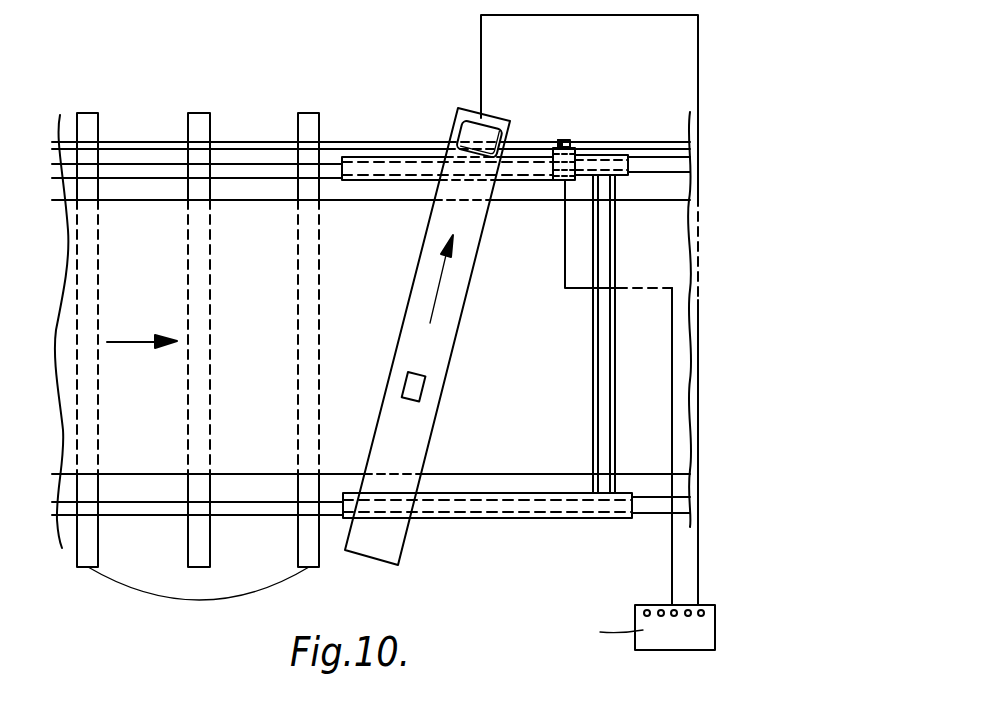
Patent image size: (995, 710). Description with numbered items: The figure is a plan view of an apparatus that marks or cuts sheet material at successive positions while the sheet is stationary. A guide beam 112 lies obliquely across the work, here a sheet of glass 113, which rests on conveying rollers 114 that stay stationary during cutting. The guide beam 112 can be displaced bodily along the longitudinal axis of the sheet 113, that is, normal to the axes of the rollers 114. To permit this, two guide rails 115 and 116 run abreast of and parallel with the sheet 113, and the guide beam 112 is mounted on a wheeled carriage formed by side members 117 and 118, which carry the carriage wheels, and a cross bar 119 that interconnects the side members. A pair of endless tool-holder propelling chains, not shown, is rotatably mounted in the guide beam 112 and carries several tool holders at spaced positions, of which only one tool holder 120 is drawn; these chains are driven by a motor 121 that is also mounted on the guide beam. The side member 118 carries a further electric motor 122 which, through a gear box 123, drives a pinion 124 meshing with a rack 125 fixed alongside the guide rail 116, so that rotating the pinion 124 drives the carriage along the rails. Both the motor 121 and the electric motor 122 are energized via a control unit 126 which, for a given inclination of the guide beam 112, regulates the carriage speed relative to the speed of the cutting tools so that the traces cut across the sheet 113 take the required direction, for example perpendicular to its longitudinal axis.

The guide beam 112 is at (460, 322).
The sheet of glass 113 is at (60, 323).
The conveying rollers 114 is at (198, 568).
The guide rail 115 is at (258, 519).
The guide rail 116 is at (233, 179).
The side member 117 is at (518, 519).
The side member 118 is at (385, 180).
The cross bar 119 is at (593, 358).
The tool holder 120 is at (426, 386).
The motor 121 is at (464, 110).
The electric motor 122 is at (555, 181).
The gear box 123 is at (553, 163).
The pinion 124 is at (570, 141).
The rack 125 is at (633, 139).
The control unit 126 is at (670, 636).